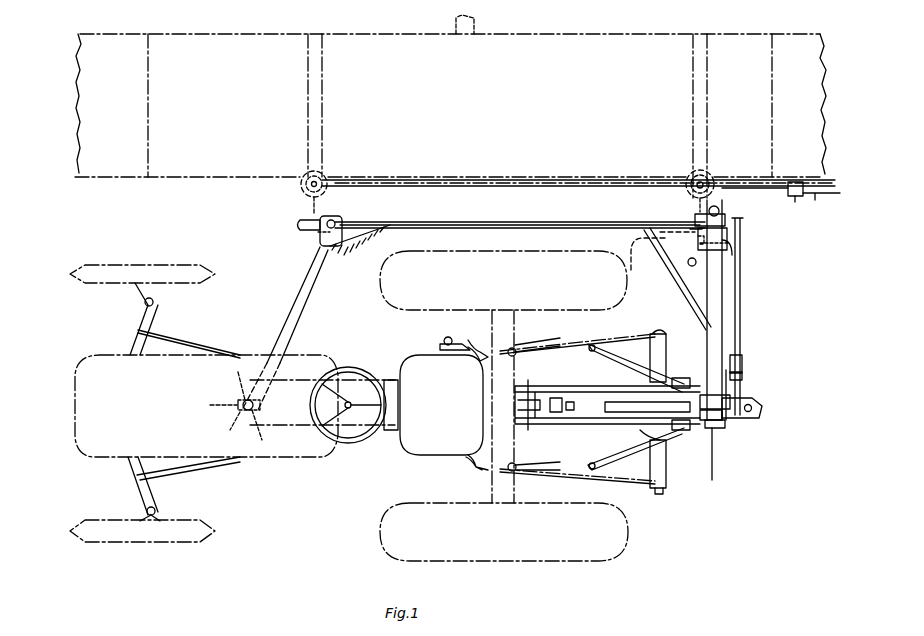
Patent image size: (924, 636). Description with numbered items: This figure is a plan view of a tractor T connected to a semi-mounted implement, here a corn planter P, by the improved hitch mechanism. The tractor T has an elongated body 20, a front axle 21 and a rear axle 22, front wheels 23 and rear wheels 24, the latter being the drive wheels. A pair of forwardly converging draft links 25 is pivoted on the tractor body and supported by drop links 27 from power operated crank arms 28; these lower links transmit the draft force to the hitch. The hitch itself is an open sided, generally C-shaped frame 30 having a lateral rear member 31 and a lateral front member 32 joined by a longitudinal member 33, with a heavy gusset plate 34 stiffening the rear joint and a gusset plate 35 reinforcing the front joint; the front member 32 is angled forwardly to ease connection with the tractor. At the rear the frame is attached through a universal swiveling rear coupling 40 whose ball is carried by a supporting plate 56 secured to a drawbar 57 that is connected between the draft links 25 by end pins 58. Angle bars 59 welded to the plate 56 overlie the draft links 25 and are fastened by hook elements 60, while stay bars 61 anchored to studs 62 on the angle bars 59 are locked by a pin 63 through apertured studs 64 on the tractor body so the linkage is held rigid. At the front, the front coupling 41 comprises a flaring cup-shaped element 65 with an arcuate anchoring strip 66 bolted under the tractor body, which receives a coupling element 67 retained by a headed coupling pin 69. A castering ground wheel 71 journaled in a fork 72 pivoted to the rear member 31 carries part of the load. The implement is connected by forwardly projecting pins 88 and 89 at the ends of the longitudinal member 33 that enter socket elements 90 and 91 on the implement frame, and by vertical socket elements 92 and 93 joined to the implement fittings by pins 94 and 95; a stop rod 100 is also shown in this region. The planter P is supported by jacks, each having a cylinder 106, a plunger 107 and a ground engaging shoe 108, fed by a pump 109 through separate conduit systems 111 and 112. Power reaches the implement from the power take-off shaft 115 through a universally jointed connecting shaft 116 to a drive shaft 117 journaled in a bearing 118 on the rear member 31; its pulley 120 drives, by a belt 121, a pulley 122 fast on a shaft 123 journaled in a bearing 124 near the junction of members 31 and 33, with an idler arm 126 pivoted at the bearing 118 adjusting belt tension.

The corn planter P is at (67, 137).
The tractor T is at (252, 477).
The elongated body 20 is at (368, 374).
The front axle 21 is at (128, 471).
The rear axle 22 is at (494, 485).
The front wheels 23 is at (178, 540).
The rear wheels 24 is at (600, 565).
The draft links 25 is at (635, 334).
The drop links 27 is at (540, 468).
The crank arms 28 is at (476, 348).
The frame 30 is at (315, 317).
The rear member 31 is at (724, 325).
The front member 32 is at (300, 324).
The longitudinal member 33 is at (524, 224).
The gusset plate 34 is at (684, 288).
The gusset plate 35 is at (338, 262).
The rear coupling 40 is at (730, 436).
The front coupling 41 is at (235, 392).
The supporting plate 56 is at (756, 418).
The drawbar 57 is at (668, 352).
The end pins 58 is at (662, 336).
The angle bars 59 is at (618, 361).
The hook elements 60 is at (590, 346).
The stay bars 61 is at (606, 390).
The studs 62 is at (690, 374).
The pin 63 is at (530, 422).
The apertured studs 64 is at (486, 405).
The cup-shaped element 65 is at (235, 378).
The anchoring strip 66 is at (252, 430).
The coupling element 67 is at (224, 426).
The coupling pin 69 is at (210, 405).
The ground wheel 71 is at (733, 261).
The castering fork 72 is at (737, 282).
The pin 88 is at (300, 223).
The pin 89 is at (695, 215).
The socket element 90 is at (318, 232).
The socket element 91 is at (692, 222).
The socket element 92 is at (334, 209).
The socket element 93 is at (715, 205).
The pin 94 is at (336, 218).
The pin 95 is at (720, 206).
The stop rod 100 is at (821, 205).
The cylinder 106 is at (300, 172).
The plunger 107 is at (310, 186).
The ground engaging shoe 108 is at (327, 165).
The pump 109 is at (795, 182).
The conduit system 111 is at (485, 182).
The conduit system 112 is at (746, 188).
The power take-off shaft 115 is at (553, 398).
The connecting shaft 116 is at (668, 444).
The drive shaft 117 is at (733, 407).
The bearing 118 is at (719, 462).
The pulley 120 is at (733, 394).
The belt 121 is at (728, 350).
The pulley 122 is at (730, 228).
The shaft 123 is at (728, 244).
The bearing 124 is at (670, 236).
The arm 126 is at (742, 376).